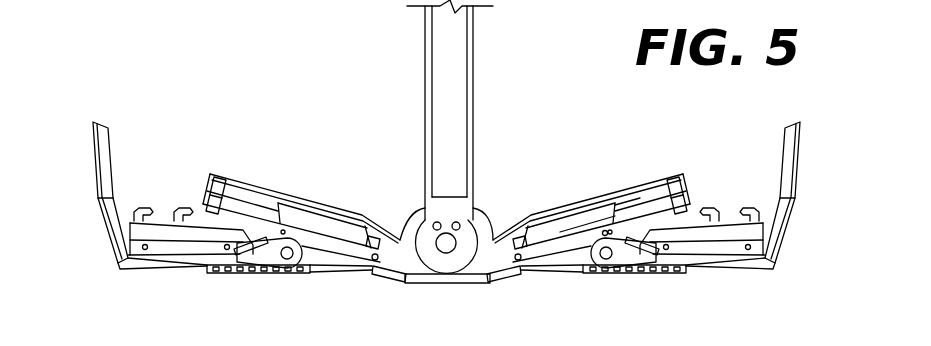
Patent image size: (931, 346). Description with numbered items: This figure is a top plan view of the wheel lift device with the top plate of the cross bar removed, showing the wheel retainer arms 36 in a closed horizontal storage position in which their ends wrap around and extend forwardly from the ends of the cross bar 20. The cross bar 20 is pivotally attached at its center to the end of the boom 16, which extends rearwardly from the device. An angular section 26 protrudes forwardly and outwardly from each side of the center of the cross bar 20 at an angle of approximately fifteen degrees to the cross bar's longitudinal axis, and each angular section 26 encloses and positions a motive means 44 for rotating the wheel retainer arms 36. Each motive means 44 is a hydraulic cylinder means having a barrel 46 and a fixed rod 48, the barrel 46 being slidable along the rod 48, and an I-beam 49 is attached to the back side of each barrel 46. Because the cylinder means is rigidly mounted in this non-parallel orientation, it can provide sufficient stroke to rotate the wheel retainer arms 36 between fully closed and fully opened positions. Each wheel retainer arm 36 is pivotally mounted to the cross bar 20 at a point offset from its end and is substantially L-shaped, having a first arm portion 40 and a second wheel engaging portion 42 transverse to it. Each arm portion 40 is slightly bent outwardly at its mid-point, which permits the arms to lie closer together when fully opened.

The boom 16 is at (472, 97).
The cross bar 20 is at (438, 281).
The angular section 26 is at (205, 192).
The wheel retainer arm 36 is at (123, 269).
The arm portion 40 is at (146, 265).
The wheel engaging portion 42 is at (97, 198).
The motive means 44 is at (298, 176).
The barrel 46 is at (603, 225).
The fixed rod 48 is at (622, 208).
The I-beam 49 is at (603, 230).